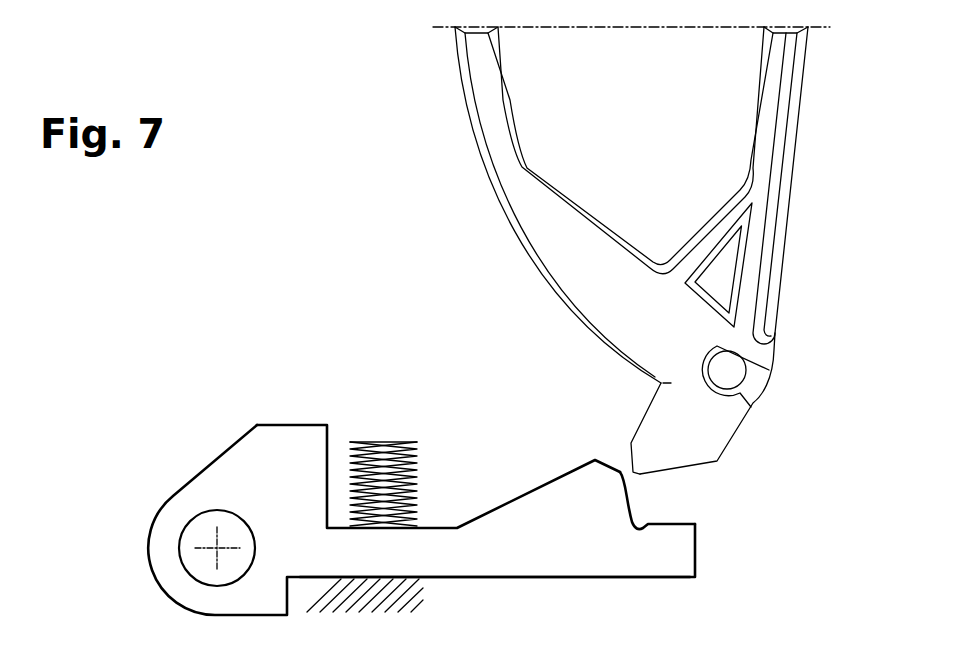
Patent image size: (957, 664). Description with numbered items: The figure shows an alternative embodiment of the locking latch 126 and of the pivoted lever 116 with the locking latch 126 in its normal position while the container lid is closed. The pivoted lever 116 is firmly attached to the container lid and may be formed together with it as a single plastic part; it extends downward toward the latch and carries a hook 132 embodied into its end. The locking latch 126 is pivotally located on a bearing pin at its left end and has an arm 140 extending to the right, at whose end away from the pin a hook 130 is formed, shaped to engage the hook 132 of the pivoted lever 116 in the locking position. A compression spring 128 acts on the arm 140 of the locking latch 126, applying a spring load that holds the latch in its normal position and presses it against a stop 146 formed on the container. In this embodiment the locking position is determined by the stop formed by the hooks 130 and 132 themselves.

The pivoted lever 116 is at (500, 162).
The locking latch 126 is at (688, 560).
The compression spring 128 is at (381, 454).
The hook 130 is at (640, 523).
The hook 132 is at (623, 472).
The arm 140 is at (568, 558).
The stop 146 is at (377, 578).